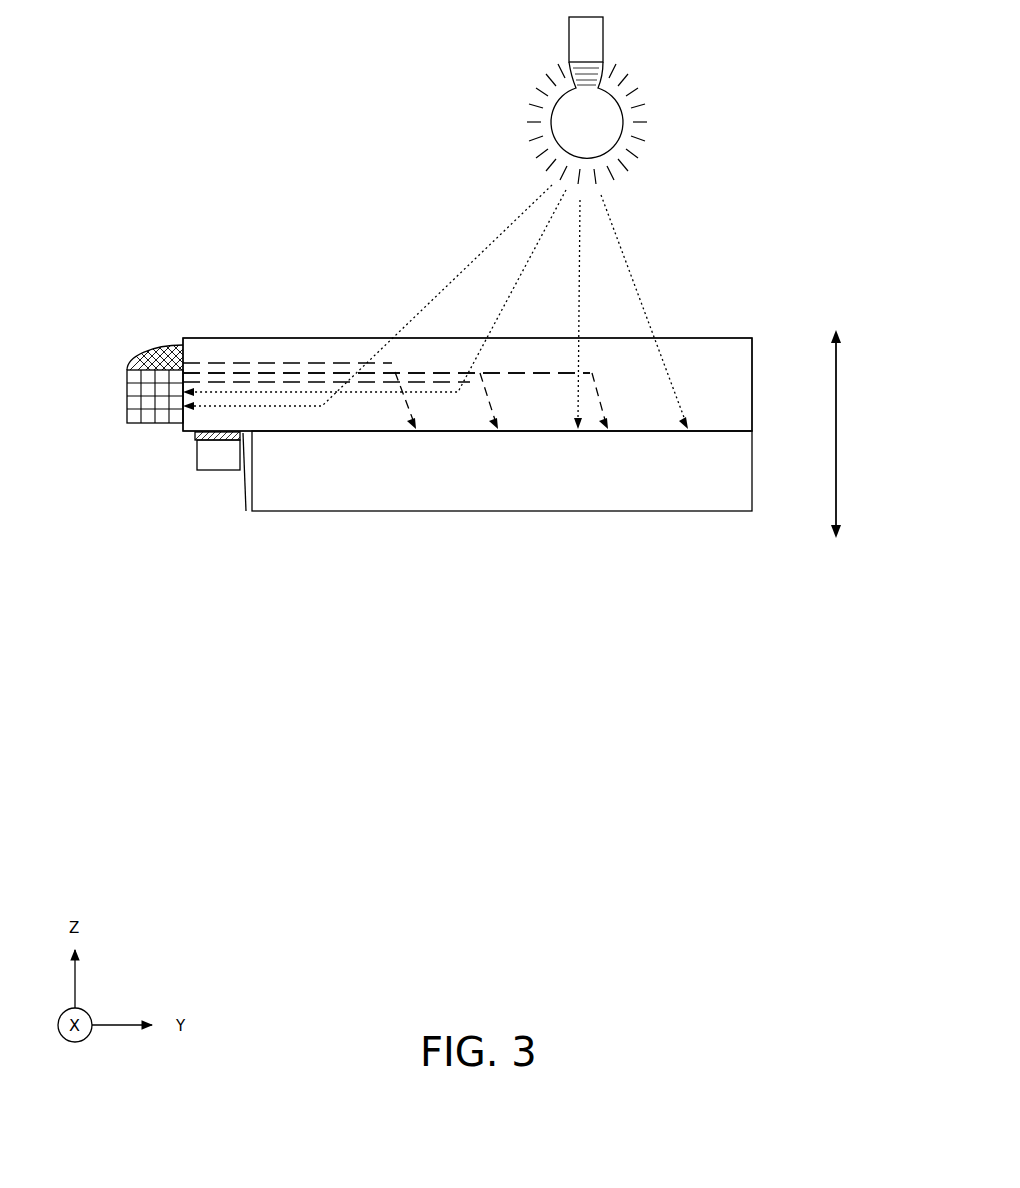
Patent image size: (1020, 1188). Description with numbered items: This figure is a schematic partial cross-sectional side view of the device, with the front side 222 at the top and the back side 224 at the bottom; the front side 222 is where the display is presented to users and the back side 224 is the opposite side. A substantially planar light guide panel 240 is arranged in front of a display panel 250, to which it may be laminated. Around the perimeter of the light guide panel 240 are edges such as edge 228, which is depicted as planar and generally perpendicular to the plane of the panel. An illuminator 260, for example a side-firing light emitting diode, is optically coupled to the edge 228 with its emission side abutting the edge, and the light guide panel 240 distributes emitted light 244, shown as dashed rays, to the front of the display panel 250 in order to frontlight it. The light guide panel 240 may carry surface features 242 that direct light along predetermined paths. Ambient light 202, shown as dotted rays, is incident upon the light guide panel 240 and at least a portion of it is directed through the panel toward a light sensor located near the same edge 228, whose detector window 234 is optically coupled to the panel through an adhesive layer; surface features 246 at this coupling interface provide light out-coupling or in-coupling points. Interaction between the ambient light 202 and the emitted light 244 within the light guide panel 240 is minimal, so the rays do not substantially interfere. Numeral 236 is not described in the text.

The ambient light 202 is at (612, 222).
The front side 222 is at (829, 402).
The back side 224 is at (830, 464).
The edge 228 is at (183, 340).
The surface features 242 is at (399, 378).
The light guide panel 240 is at (206, 352).
The emitted light 244 is at (269, 360).
The illuminator 260 is at (127, 378).
The adhesive layer 236 is at (151, 453).
The detector window 234 is at (148, 470).
The surface features 246 is at (246, 510).
The display panel 250 is at (352, 485).